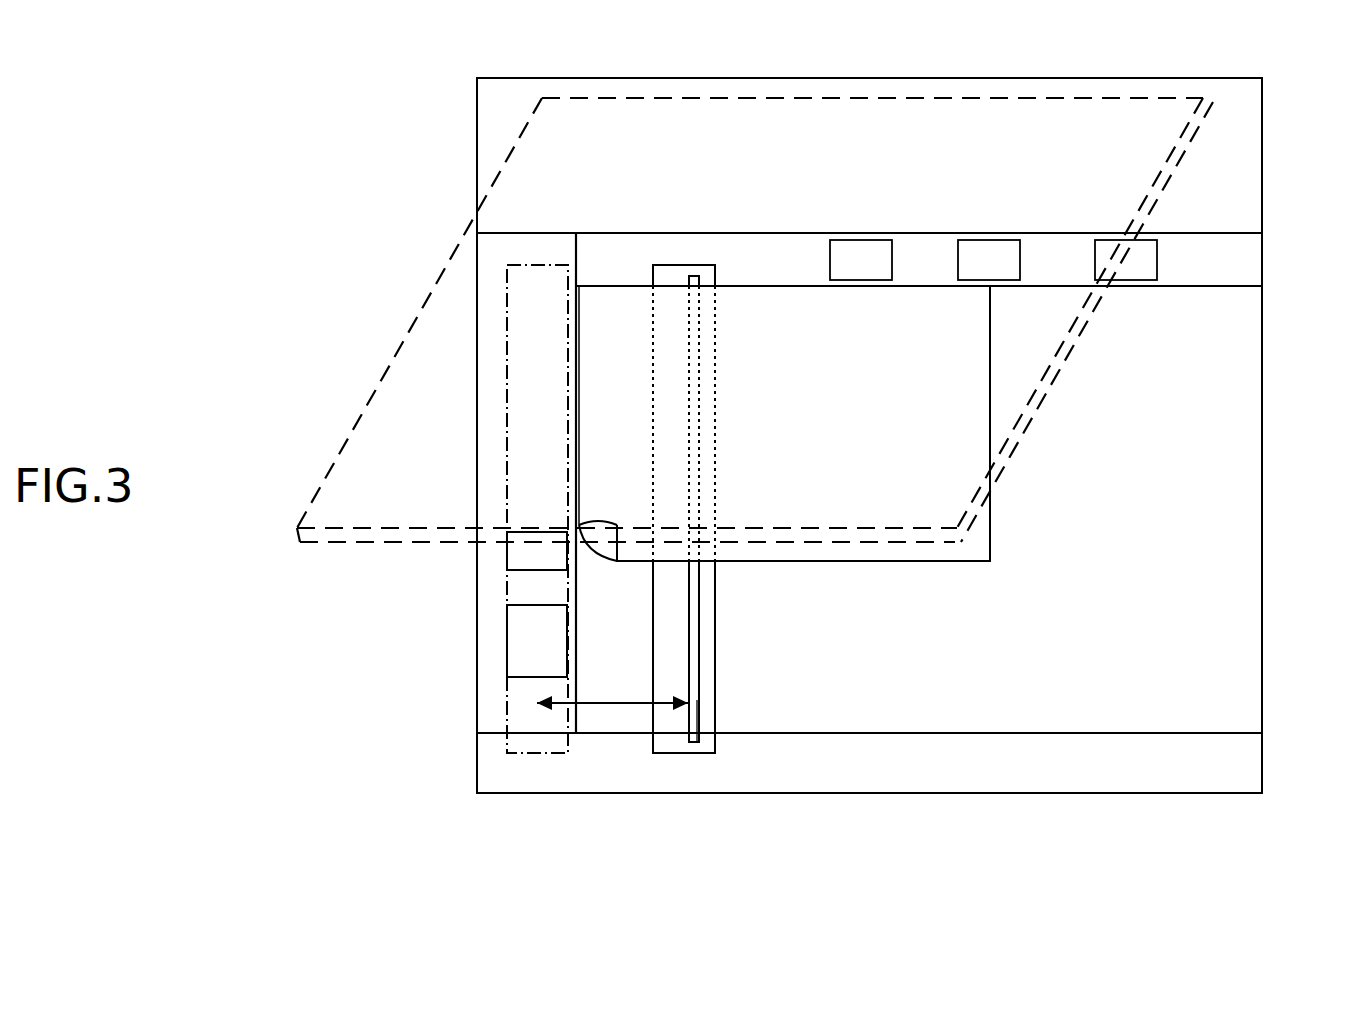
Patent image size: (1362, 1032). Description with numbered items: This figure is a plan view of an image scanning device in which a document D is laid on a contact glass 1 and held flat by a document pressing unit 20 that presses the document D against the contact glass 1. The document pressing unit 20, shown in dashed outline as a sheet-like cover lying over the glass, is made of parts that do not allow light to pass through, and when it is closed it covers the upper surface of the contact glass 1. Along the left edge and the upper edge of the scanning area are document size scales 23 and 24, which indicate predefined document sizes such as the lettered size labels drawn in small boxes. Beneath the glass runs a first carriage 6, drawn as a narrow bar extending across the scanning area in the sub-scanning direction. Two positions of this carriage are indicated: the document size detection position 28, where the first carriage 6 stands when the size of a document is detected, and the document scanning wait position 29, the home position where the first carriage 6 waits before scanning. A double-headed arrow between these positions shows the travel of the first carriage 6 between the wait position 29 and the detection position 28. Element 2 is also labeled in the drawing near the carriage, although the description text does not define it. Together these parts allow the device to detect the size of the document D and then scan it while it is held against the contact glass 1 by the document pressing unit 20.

The contact glass 1 is at (1245, 520).
The reading unit 2 is at (700, 746).
The first carriage 6 is at (665, 742).
The document pressing unit 20 is at (410, 352).
The document size scale 23 is at (527, 677).
The document size scale 24 is at (1245, 255).
The document size detection position 28 is at (688, 760).
The document scanning wait position 29 is at (534, 756).
The document D is at (872, 563).